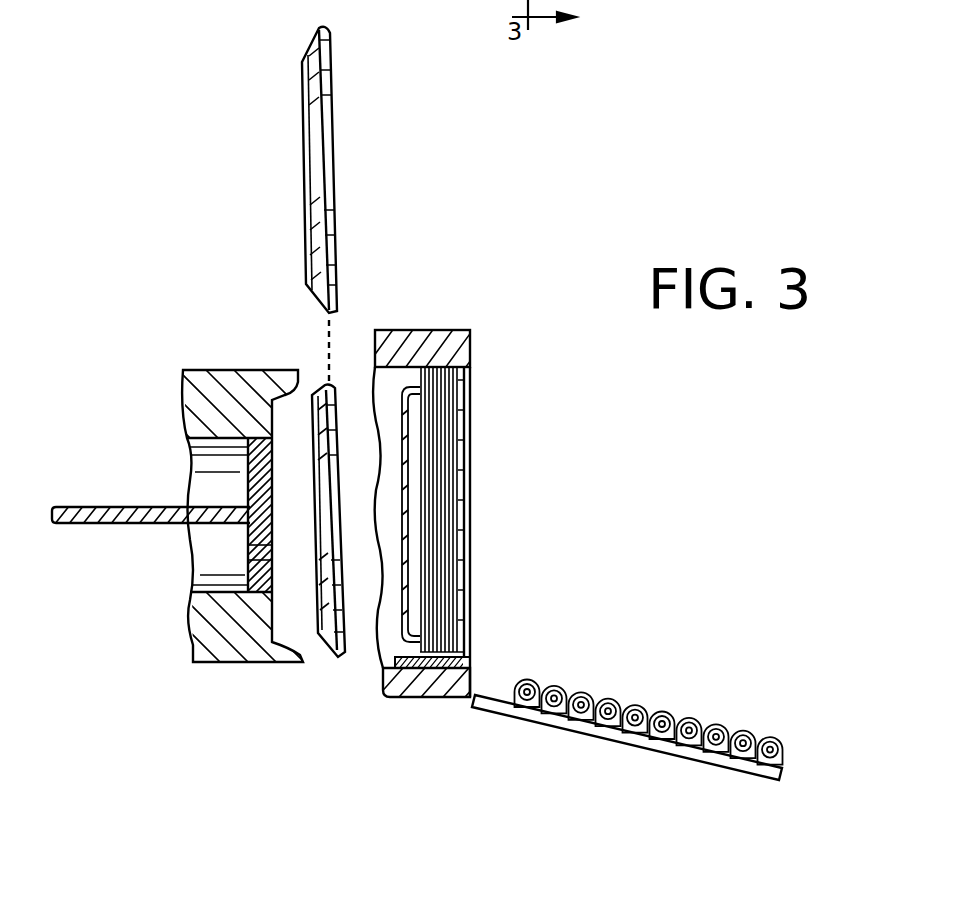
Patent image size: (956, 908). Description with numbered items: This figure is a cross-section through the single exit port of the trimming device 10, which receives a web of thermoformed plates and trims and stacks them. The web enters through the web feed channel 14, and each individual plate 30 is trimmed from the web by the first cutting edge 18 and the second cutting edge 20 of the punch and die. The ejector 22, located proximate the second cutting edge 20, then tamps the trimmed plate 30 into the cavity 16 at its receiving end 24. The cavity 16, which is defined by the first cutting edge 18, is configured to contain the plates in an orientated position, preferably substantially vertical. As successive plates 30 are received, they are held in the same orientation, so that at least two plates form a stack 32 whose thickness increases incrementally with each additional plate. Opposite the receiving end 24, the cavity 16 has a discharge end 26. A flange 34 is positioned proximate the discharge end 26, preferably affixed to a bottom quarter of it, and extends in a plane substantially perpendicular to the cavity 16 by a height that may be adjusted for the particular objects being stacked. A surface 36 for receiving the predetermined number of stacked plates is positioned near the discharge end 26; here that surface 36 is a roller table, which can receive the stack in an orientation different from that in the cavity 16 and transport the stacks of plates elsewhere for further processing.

The trimming device 10 is at (228, 299).
The web feed channel 14 is at (357, 355).
The cavity 16 is at (400, 377).
The first cutting edge 18 is at (297, 372).
The second cutting edge 20 is at (384, 658).
The ejector 22 is at (168, 527).
The receiving end 24 is at (380, 507).
The discharge end 26 is at (475, 580).
The plate 30 is at (320, 653).
The stack 32 is at (437, 422).
The flange 34 is at (475, 656).
The surface for receiving 36 is at (785, 748).